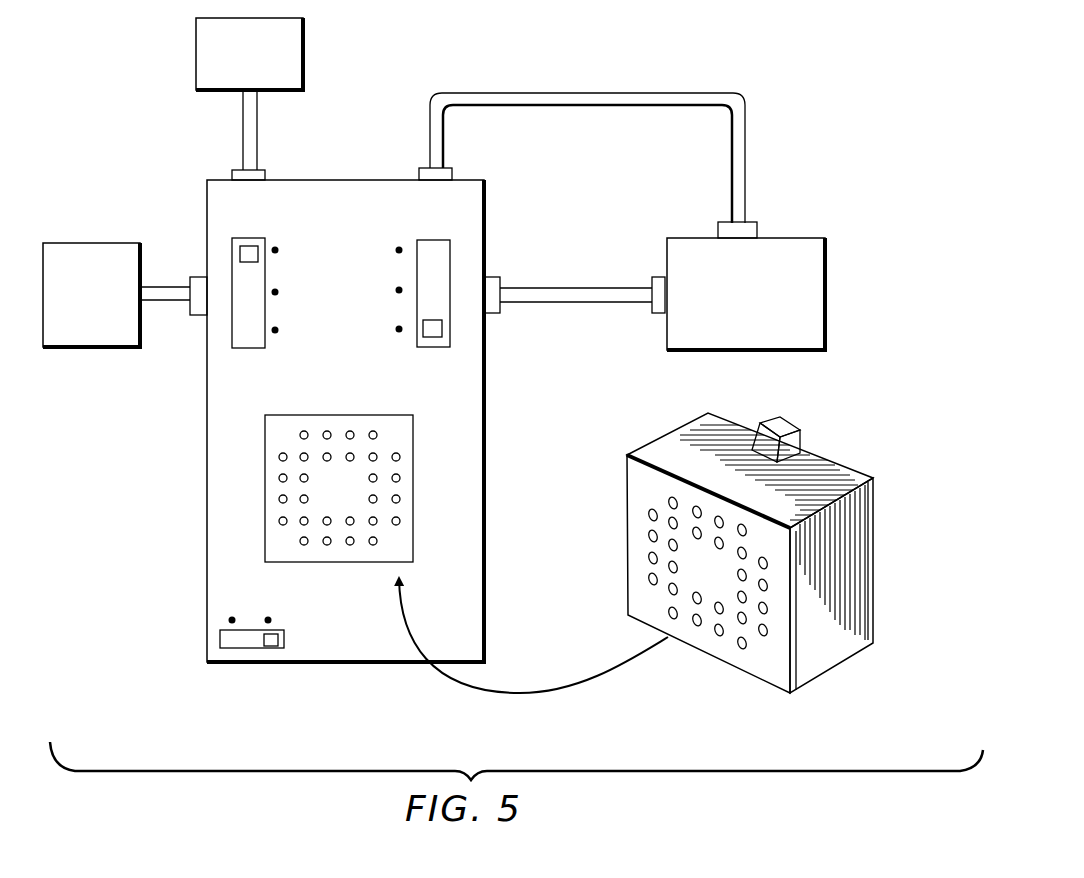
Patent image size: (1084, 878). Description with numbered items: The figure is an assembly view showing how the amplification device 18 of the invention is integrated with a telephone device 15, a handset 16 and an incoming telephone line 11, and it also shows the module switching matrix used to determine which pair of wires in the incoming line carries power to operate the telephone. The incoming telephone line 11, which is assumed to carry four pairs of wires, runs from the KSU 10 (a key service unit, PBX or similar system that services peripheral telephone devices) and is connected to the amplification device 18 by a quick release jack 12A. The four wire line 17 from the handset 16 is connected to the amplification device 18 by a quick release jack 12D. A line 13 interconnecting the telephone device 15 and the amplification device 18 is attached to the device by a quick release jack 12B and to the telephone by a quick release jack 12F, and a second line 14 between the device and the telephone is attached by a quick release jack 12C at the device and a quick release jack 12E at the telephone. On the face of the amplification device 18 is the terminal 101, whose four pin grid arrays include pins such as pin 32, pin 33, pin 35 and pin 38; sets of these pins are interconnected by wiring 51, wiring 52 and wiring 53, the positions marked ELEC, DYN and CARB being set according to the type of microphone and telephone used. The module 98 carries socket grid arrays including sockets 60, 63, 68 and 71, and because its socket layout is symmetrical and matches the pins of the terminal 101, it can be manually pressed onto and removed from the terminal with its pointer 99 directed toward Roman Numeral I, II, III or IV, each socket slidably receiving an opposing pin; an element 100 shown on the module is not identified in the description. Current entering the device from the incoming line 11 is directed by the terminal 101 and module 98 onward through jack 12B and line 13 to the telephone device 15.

The KSU 10 is at (303, 40).
The incoming telephone line 11 is at (243, 110).
The quick release jack 12A is at (265, 172).
The quick release jack 12B is at (452, 175).
The quick release jack 12C is at (500, 313).
The quick release jack 12D is at (196, 280).
The quick release jack 12E is at (660, 313).
The quick release jack 12F is at (757, 235).
The line 13 is at (473, 93).
The line 14 is at (590, 266).
The telephone device 15 is at (825, 252).
The handset 16 is at (102, 243).
The four wire line 17 is at (165, 300).
The amplification device 18 is at (250, 679).
The pin 32 is at (375, 433).
The pin 33 is at (280, 457).
The pin 35 is at (303, 543).
The pin 38 is at (400, 523).
The wiring 51 is at (232, 322).
The wiring 52 is at (220, 638).
The wiring 53 is at (442, 347).
The socket 60 is at (670, 503).
The socket 63 is at (743, 526).
The socket 68 is at (742, 647).
The socket 71 is at (671, 615).
The module 98 is at (765, 546).
The pointer 99 is at (790, 423).
The pin block housing 100 is at (873, 512).
The terminal 101 is at (297, 486).